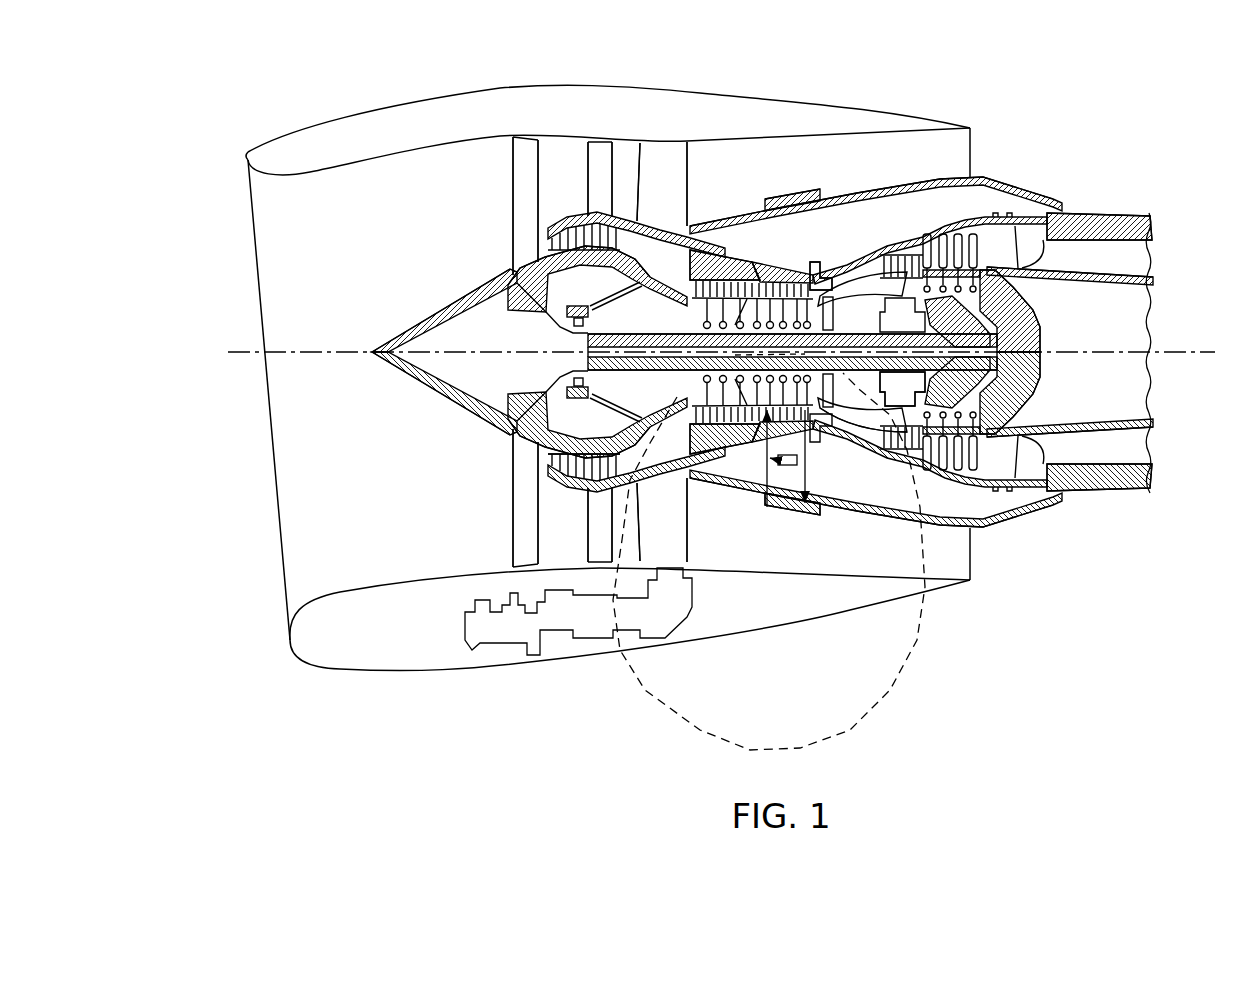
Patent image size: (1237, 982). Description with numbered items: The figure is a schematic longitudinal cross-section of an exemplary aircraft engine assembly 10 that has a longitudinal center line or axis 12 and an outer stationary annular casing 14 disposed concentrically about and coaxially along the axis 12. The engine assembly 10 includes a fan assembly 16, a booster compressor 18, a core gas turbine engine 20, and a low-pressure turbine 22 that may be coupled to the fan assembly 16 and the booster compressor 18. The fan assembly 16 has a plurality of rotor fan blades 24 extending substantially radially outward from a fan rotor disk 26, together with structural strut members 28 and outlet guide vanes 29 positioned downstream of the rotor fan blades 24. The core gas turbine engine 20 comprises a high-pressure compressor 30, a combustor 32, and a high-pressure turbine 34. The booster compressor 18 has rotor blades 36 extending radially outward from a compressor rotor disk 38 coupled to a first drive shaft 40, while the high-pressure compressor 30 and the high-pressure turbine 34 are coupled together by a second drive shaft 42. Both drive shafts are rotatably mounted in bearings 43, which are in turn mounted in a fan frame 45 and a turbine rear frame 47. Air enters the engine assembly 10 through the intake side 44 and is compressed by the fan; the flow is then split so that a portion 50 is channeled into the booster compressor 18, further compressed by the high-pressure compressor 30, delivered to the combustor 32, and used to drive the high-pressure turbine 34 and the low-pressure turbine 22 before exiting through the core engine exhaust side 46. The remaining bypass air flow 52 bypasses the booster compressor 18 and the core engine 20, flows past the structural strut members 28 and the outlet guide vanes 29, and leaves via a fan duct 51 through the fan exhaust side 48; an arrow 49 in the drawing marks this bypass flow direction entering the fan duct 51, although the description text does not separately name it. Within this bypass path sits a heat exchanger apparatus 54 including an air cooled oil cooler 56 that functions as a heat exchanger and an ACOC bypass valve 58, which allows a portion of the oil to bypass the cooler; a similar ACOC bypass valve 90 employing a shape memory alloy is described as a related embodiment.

The aircraft engine assembly 10 is at (1126, 125).
The longitudinal center line or axis 12 is at (312, 350).
The outer stationary annular casing 14 is at (740, 262).
The fan assembly 16 is at (478, 226).
The booster compressor 18 is at (563, 491).
The core gas turbine engine 20 is at (827, 272).
The low-pressure turbine 22 is at (953, 492).
The rotor fan blades 24 is at (517, 485).
The fan rotor disk 26 is at (507, 395).
The structural strut members 28 is at (600, 163).
The outlet guide vanes 29 is at (687, 162).
The high-pressure compressor 30 is at (742, 425).
The combustor 32 is at (847, 433).
The high-pressure turbine 34 is at (910, 456).
The rotor blades 36 is at (595, 457).
The compressor rotor disk 38 is at (550, 268).
The first drive shaft 40 is at (623, 338).
The second drive shaft 42 is at (1033, 403).
The bearings 43 is at (1033, 308).
The intake side 44 is at (250, 258).
The fan frame 45 is at (517, 88).
The core engine exhaust side 46 is at (1146, 260).
The turbine rear frame 47 is at (1133, 213).
The fan exhaust side 48 is at (986, 153).
The bypass airflow 49 is at (645, 215).
The portion of the airflow 50 is at (563, 462).
The fan duct 51 is at (762, 105).
The bypass air flow 52 is at (563, 190).
The heat exchanger apparatus 54 is at (831, 538).
The air cooled oil cooler 56 is at (797, 507).
The ACOC bypass valve 58 is at (460, 341).
The ACOC bypass valve 90 is at (628, 485).